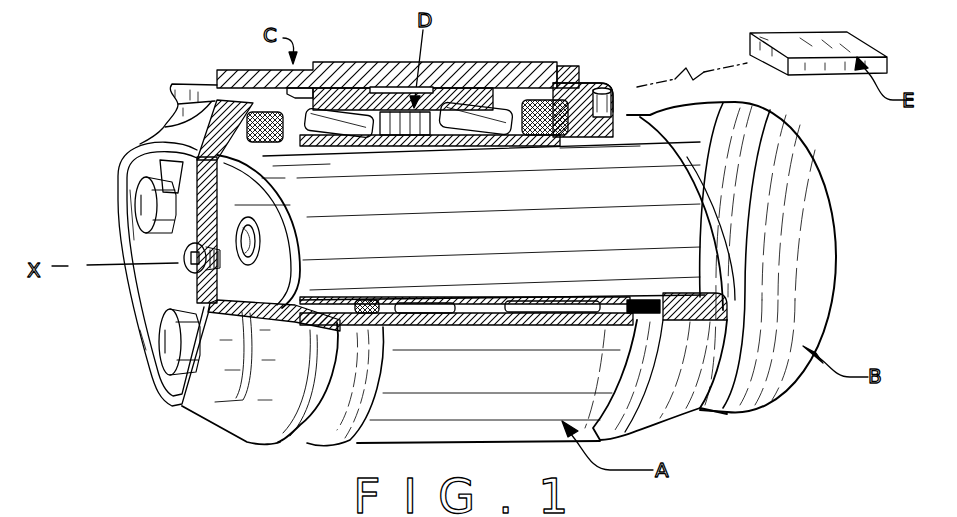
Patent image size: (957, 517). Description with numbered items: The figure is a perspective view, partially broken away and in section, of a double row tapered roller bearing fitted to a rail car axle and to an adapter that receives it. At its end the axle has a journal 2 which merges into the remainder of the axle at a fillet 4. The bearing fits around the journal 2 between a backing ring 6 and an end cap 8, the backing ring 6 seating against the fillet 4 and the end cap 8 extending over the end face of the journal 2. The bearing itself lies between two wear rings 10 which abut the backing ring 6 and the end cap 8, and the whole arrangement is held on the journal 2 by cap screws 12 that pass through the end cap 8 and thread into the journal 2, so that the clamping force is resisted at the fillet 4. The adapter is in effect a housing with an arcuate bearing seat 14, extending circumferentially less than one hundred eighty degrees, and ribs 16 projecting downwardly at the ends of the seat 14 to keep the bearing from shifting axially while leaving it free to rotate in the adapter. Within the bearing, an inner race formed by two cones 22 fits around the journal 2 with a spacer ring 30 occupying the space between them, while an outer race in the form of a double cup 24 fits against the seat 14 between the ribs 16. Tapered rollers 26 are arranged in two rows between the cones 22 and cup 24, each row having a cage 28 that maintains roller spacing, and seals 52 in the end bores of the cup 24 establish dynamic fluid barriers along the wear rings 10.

The journal 2 is at (592, 262).
The fillet 4 is at (675, 176).
The backing ring 6 is at (688, 397).
The end cap 8 is at (187, 287).
The wear rings 10 is at (163, 143).
The cap screws 12 is at (145, 205).
The arcuate bearing seat 14 is at (480, 90).
The ribs 16 is at (253, 93).
The cones 22 is at (340, 143).
The double cup 24 is at (447, 90).
The tapered rollers 26 is at (337, 78).
The cage 28 is at (373, 93).
The spacer ring 30 is at (403, 147).
The seals 52 is at (283, 137).